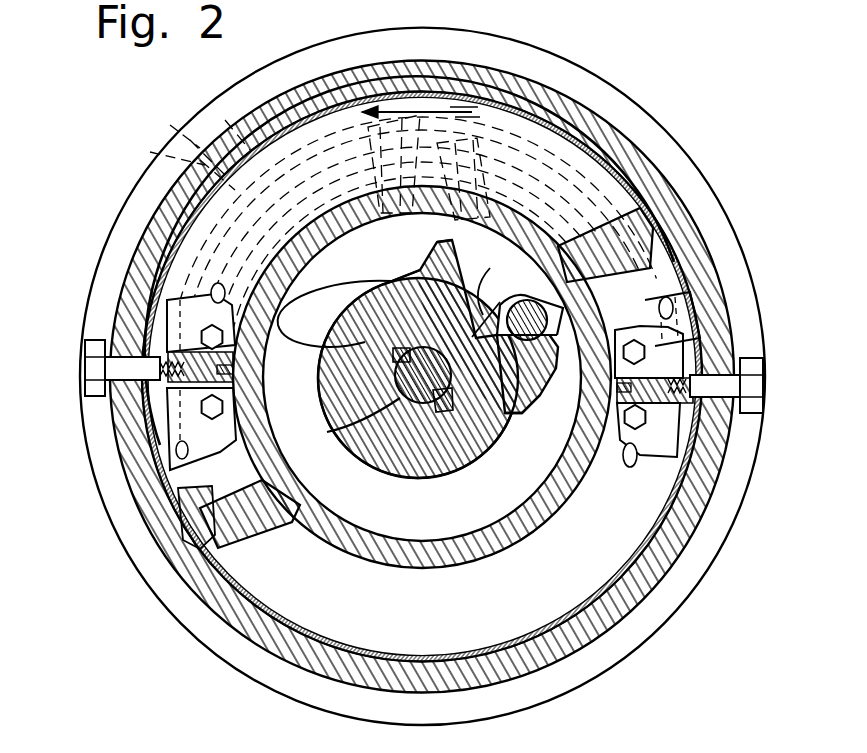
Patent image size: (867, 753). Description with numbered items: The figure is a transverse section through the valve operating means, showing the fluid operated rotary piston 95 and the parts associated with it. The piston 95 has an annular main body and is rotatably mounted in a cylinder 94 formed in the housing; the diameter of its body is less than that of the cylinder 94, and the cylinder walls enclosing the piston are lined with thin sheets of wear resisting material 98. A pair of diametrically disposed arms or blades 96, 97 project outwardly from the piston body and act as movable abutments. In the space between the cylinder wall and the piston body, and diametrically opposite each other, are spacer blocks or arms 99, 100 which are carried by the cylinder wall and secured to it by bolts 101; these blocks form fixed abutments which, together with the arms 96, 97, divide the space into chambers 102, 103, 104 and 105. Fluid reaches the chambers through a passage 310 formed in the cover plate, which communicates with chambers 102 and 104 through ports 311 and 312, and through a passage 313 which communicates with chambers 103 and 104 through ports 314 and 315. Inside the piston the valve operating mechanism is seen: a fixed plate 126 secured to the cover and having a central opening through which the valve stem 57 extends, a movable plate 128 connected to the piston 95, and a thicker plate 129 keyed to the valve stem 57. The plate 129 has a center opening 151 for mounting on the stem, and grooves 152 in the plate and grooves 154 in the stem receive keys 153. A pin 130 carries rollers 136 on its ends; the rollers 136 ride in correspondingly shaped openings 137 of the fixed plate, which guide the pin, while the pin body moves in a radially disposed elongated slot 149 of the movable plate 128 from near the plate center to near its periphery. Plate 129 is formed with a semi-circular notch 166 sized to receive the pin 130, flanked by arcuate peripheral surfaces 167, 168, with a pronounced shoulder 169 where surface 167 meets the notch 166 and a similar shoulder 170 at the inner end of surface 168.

The valve stem 57 is at (345, 425).
The cylinder 94 is at (220, 573).
The rotary piston 95 is at (298, 513).
The arm or blade 96 is at (651, 228).
The arm or blade 97 is at (177, 486).
The wear resisting lining 98 is at (268, 608).
The spacer block or arm 99 is at (666, 370).
The spacer block or arm 100 is at (170, 345).
The bolt 101 is at (115, 375).
The chamber 102 is at (646, 277).
The chamber 103 is at (416, 220).
The chamber 104 is at (190, 421).
The chamber 105 is at (422, 376).
The fixed plate 126 is at (358, 383).
The movable plate 128 is at (409, 381).
The plate 129 is at (387, 463).
The pin 130 is at (523, 308).
The roller 136 is at (551, 290).
The opening 137 is at (550, 307).
The elongated opening or slot 149 is at (492, 284).
The center opening 151 is at (437, 465).
The groove or recess 152 is at (397, 353).
The key 153 is at (402, 345).
The groove or recess 154 is at (400, 372).
The semi-circular notch 166 is at (466, 306).
The arcuate peripheral surface 167 is at (473, 254).
The arcuate peripheral surface 168 is at (542, 390).
The corner or shoulder 169 is at (422, 272).
The corner or shoulder 170 is at (526, 425).
The passage 310 is at (150, 152).
The port 311 is at (670, 302).
The port 312 is at (174, 451).
The passage 313 is at (170, 125).
The port 314 is at (212, 288).
The port 315 is at (630, 467).